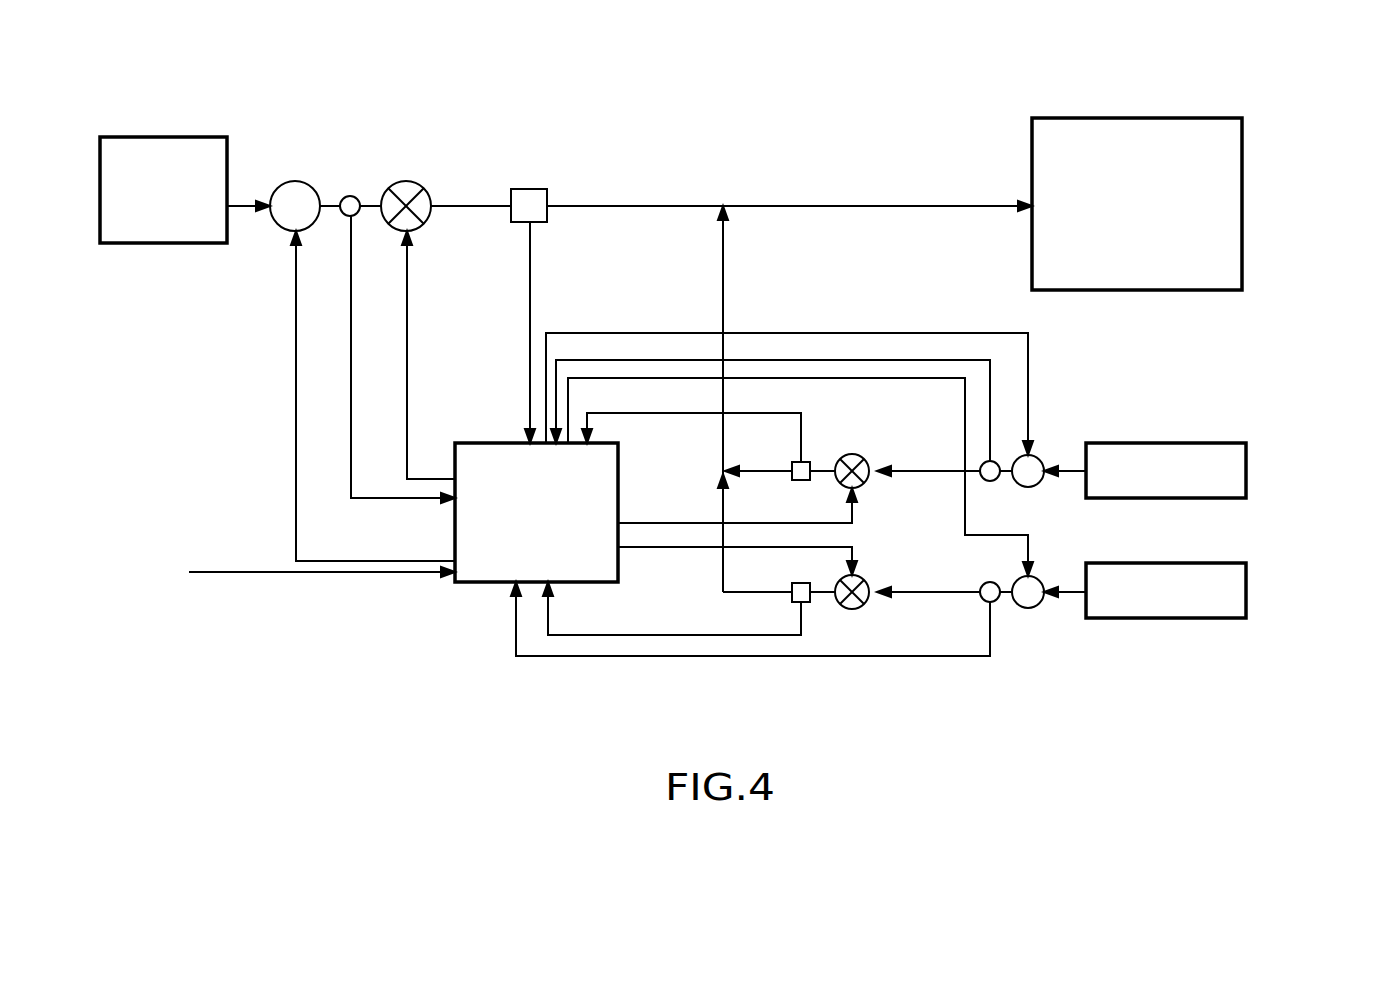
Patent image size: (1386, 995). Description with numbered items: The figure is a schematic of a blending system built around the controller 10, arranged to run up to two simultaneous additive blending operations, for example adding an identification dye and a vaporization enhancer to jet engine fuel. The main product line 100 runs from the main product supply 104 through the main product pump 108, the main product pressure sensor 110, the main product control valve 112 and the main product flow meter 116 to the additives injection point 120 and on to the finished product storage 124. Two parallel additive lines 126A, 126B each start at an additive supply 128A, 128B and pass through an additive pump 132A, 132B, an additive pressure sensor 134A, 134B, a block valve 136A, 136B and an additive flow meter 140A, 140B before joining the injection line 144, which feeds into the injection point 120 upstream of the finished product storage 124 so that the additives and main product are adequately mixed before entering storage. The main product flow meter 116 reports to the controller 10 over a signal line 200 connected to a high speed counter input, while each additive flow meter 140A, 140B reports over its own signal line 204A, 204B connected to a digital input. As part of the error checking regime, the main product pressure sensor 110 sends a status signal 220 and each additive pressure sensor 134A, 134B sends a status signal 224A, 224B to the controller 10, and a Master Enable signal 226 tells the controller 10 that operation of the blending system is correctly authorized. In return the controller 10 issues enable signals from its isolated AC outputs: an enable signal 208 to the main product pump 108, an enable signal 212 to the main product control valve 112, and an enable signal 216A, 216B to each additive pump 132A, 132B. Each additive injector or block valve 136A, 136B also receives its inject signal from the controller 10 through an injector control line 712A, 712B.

The controller 10 is at (479, 592).
The main product line 100 is at (240, 213).
The main product supply 104 is at (163, 137).
The main product pump 108 is at (295, 182).
The main product pressure sensor 110 is at (350, 197).
The main product control valve 112 is at (405, 178).
The main product flow meter 116 is at (548, 195).
The additives injection point 120 is at (722, 205).
The finished product storage 124 is at (1108, 118).
The injection line 144 is at (723, 320).
The additive line 126A is at (770, 467).
The additive line 126B is at (722, 573).
The additive supply 128A is at (1247, 478).
The additive supply 128B is at (1247, 597).
The additive pump 132A is at (1040, 488).
The additive pump 132B is at (1035, 610).
The additive pressure sensor 134A is at (1000, 460).
The additive pressure sensor 134B is at (991, 580).
The block valve 136A is at (858, 443).
The block valve 136B is at (855, 610).
The additive flow meter 140A is at (805, 462).
The additive flow meter 140B is at (803, 605).
The signal line 200 is at (530, 313).
The signal line 204A is at (748, 413).
The signal line 204B is at (690, 637).
The enable signal 208 is at (295, 395).
The enable signal 212 is at (407, 398).
The enable signal 216A is at (1028, 362).
The enable signal 216B is at (1040, 540).
The status signal 220 is at (352, 330).
The status signal 224A is at (898, 333).
The status signal 224B is at (940, 657).
The Master Enable signal 226 is at (233, 570).
The injector control line 712A is at (860, 503).
The injector control line 712B is at (860, 553).